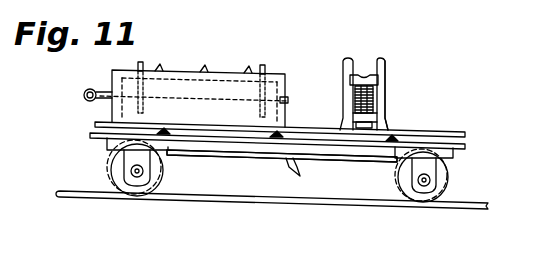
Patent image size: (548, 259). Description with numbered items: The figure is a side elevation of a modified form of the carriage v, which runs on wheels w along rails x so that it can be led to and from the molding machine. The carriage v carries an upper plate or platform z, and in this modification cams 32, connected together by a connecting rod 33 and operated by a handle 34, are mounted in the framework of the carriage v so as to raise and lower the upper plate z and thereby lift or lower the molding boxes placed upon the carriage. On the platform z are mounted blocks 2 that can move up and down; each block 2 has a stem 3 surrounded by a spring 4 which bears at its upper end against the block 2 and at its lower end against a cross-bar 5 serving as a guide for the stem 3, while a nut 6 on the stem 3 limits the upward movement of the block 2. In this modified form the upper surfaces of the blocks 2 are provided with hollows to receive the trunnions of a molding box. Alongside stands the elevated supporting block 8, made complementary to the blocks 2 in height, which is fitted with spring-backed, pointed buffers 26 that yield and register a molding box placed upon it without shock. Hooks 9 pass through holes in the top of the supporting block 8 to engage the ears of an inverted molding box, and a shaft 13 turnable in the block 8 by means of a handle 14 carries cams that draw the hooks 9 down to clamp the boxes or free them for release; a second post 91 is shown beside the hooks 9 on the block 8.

The blocks 2 is at (361, 73).
The stems 3 is at (385, 89).
The springs 4 is at (350, 88).
The cross-bars 5 is at (373, 116).
The nuts 6 is at (350, 121).
The supporting block 8 is at (194, 98).
The hooks 9 is at (143, 61).
The post 91 is at (343, 69).
The shaft 13 is at (100, 89).
The handle 14 is at (83, 98).
The buffers 26 is at (161, 65).
The cams 32 is at (172, 140).
The connecting rod 33 is at (223, 158).
The handle 34 is at (290, 178).
The wheels w is at (108, 170).
The rails x is at (492, 194).
The platform z is at (446, 128).
The carriage v is at (325, 157).